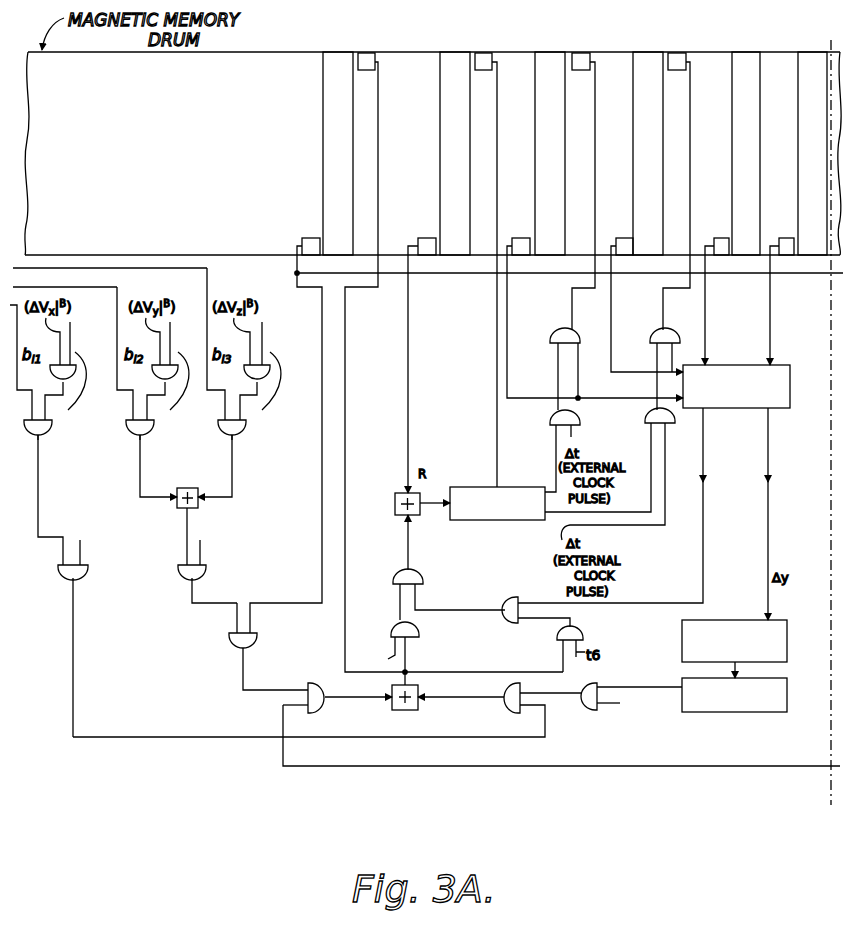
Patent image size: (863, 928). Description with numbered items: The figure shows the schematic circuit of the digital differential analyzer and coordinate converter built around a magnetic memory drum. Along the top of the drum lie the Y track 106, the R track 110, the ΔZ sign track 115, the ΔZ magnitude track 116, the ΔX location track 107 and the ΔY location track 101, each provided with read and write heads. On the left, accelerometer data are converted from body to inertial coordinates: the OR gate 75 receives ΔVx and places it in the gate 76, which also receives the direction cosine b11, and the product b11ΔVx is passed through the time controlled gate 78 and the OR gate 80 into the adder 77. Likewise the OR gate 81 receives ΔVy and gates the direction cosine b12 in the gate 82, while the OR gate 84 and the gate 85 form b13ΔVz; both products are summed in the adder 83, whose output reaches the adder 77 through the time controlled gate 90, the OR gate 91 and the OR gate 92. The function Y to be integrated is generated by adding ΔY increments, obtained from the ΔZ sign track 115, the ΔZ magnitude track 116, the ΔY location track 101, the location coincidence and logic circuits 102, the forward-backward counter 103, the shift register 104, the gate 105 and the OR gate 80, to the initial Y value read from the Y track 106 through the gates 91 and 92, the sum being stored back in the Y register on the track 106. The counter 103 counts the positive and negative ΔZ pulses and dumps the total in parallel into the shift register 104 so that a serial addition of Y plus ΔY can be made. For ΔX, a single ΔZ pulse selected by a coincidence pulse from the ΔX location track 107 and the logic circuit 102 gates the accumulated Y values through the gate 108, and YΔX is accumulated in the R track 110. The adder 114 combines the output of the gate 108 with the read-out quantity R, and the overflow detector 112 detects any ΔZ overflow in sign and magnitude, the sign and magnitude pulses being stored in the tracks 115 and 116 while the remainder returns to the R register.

The ΔY location track 101 is at (807, 57).
The ΔX location track 107 is at (746, 57).
The ΔZ magnitude track 116 is at (646, 57).
The ΔZ sign track 115 is at (548, 57).
The R track 110 is at (453, 57).
The Y track 106 is at (338, 57).
The OR gate 75 is at (55, 373).
The gate 76 is at (36, 437).
The OR gate 81 is at (152, 373).
The gate 82 is at (137, 437).
The OR gate 84 is at (246, 373).
The gate 85 is at (230, 437).
The adder 83 is at (178, 509).
The time controlled gate 78 is at (86, 575).
The time controlled gate 90 is at (207, 573).
The OR gate 91 is at (230, 645).
The OR gate 92 is at (312, 713).
The adder 77 is at (410, 710).
The OR gate 80 is at (510, 713).
The adder 114 is at (397, 496).
The overflow detector 112 is at (466, 487).
The gate 108 is at (507, 598).
The location coincidence and logic circuits 102 is at (787, 408).
The forward-backward counter 103 is at (740, 610).
The shift register 104 is at (705, 712).
The gate 105 is at (588, 684).